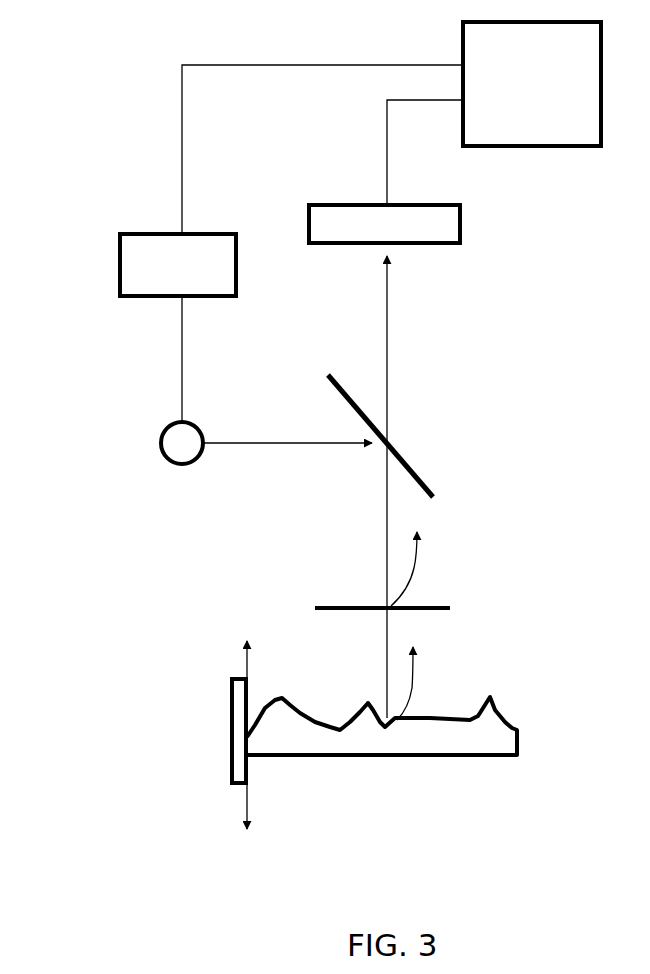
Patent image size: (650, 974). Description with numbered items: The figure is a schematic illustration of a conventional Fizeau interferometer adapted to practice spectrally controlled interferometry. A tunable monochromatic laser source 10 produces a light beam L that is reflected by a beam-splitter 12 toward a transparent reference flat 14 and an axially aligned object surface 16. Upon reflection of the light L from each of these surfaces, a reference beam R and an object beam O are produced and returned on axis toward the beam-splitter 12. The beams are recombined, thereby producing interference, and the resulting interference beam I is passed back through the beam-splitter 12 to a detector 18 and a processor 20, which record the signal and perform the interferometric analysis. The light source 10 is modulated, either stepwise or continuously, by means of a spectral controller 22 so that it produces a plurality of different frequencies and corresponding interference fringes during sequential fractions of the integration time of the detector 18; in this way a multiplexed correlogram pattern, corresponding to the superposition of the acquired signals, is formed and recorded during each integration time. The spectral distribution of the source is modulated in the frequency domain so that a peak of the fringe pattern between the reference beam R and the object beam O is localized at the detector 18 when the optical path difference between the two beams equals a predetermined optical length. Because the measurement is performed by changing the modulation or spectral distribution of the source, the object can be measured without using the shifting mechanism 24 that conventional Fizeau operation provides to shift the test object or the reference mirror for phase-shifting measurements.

The tunable monochromatic laser source 10 is at (160, 462).
The beam-splitter 12 is at (422, 478).
The transparent reference flat 14 is at (320, 605).
The object surface 16 is at (520, 728).
The detector 18 is at (458, 245).
The processor 20 is at (548, 150).
The spectral controller 22 is at (118, 238).
The shifting mechanism 24 is at (230, 727).
The light beam L is at (247, 443).
The reference beam R is at (417, 565).
The object beam O is at (417, 673).
The interference beam I is at (388, 365).